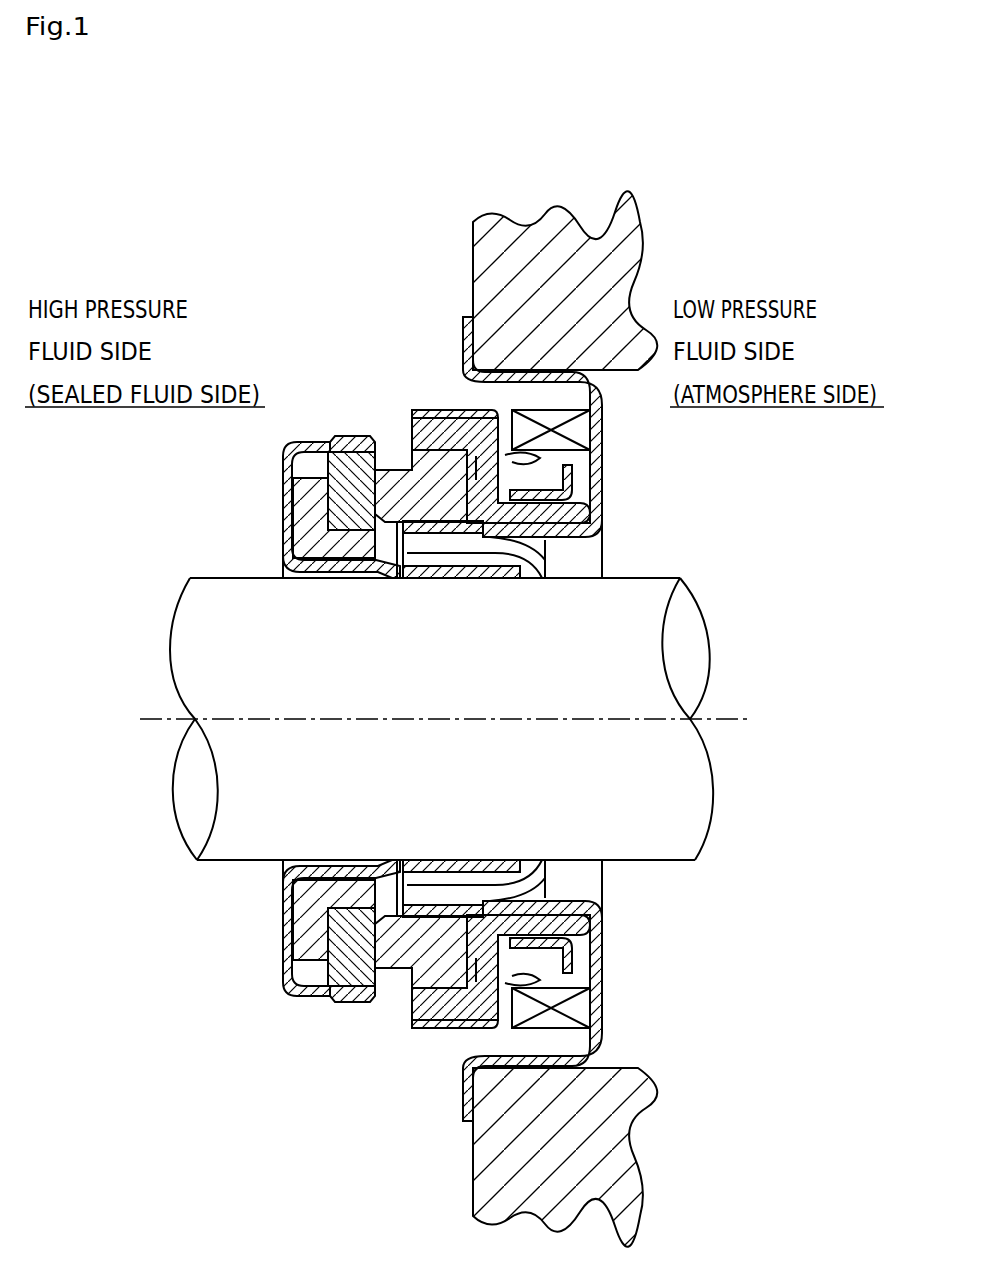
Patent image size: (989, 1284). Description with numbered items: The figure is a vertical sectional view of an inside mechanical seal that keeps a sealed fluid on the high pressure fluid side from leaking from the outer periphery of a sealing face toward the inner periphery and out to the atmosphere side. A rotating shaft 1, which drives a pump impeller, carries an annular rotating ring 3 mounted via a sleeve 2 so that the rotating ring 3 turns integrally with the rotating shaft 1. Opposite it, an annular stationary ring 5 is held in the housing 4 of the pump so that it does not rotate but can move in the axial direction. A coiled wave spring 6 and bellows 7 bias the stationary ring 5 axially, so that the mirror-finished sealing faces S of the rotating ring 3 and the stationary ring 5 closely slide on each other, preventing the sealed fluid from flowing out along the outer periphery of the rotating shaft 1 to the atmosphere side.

The rotating shaft 1 is at (338, 687).
The sleeve 2 is at (292, 505).
The rotating ring 3 is at (328, 442).
The housing 4 is at (550, 245).
The stationary ring 5 is at (422, 474).
The coiled wave spring 6 is at (603, 433).
The bellows 7 is at (468, 433).
The sealing faces S is at (398, 528).